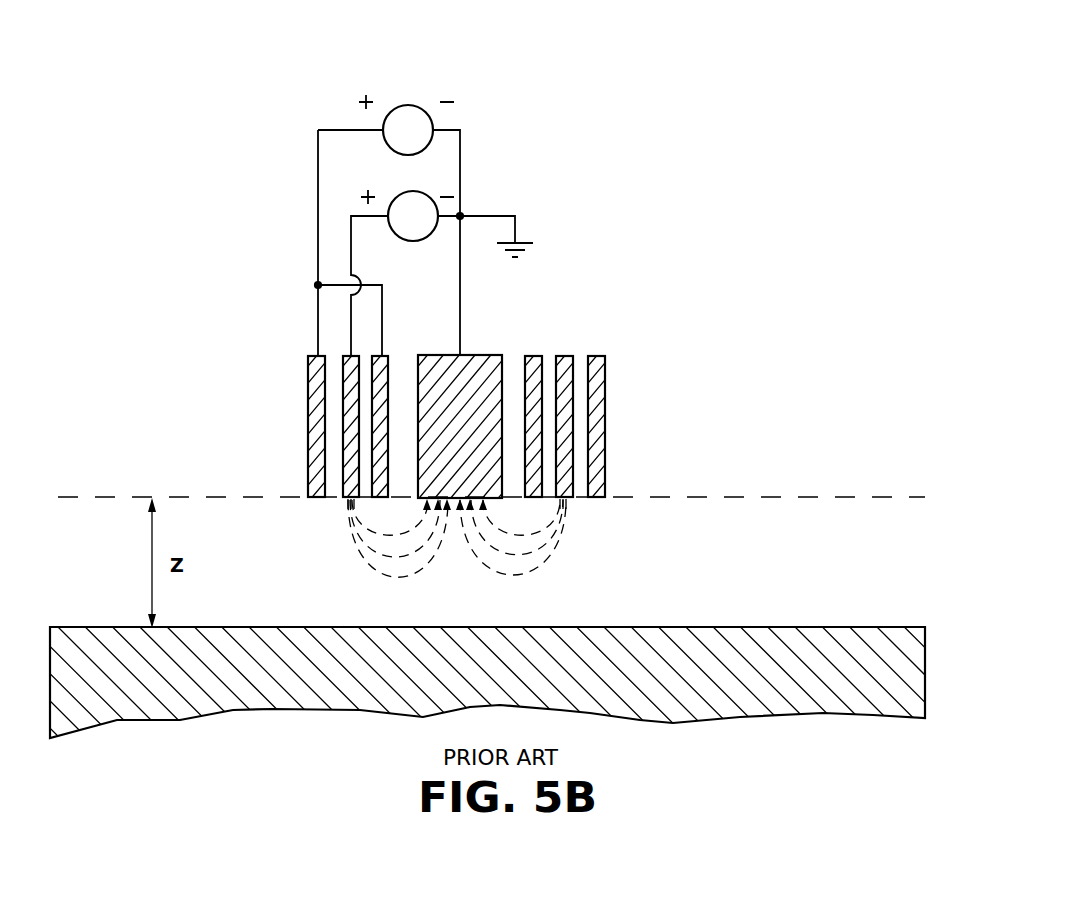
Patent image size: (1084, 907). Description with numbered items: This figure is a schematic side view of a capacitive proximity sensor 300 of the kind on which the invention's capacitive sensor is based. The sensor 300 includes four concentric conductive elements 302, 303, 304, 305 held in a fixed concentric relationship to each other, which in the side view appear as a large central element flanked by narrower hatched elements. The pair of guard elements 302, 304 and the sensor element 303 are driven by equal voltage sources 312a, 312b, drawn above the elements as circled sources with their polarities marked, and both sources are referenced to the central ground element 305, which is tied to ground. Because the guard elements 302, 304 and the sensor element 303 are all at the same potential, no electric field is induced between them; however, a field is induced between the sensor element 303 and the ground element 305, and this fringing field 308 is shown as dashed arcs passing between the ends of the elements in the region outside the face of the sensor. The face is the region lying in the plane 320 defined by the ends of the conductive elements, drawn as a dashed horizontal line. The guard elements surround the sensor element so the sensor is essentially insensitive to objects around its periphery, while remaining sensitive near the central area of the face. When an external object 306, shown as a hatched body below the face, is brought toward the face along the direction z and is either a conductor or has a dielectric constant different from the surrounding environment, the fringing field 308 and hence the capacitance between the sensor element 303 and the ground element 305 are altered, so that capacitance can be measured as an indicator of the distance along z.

The sensor 300 is at (258, 397).
The guard element 302 is at (605, 390).
The sensor element 303 is at (567, 356).
The guard element 304 is at (535, 355).
The ground element 305 is at (483, 355).
The external object 306 is at (803, 627).
The fringing field 308 is at (362, 553).
The voltage source 312a is at (410, 105).
The voltage source 312b is at (422, 192).
The plane 320 is at (810, 495).